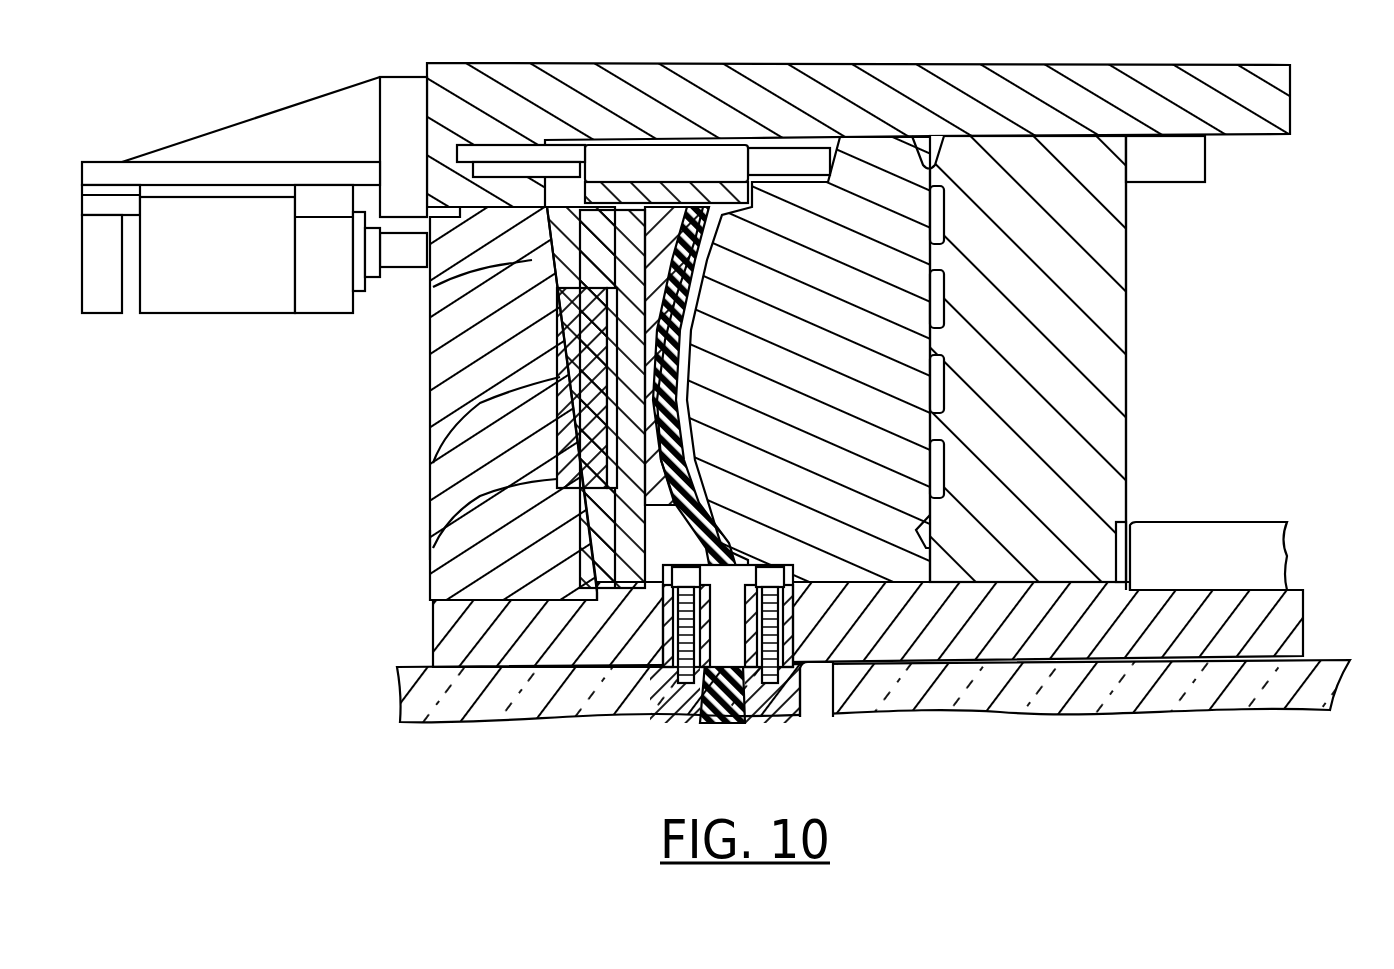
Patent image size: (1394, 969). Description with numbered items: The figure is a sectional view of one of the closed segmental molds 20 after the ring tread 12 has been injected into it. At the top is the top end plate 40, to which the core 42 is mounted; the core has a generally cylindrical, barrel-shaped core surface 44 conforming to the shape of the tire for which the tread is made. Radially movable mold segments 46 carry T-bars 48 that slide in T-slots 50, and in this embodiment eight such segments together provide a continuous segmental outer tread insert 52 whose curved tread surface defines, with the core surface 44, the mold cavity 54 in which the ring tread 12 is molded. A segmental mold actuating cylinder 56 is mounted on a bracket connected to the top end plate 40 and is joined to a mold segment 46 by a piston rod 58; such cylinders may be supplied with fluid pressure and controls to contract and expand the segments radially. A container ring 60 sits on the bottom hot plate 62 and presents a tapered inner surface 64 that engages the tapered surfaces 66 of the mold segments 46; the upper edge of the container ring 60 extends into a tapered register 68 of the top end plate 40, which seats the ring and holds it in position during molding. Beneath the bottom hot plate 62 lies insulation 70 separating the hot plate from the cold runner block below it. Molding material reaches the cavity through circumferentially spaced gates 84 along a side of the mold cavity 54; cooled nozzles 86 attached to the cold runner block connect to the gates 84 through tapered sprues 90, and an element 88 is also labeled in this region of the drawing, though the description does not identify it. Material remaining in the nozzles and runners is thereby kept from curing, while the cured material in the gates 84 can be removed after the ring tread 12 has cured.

The ring tread 12 is at (436, 540).
The segmental mold 20 is at (430, 297).
The top end plate 40 is at (1088, 82).
The core 42 is at (1128, 332).
The core surface 44 is at (810, 170).
The mold segment 46 is at (627, 213).
The T-bar 48 is at (732, 177).
The T-slot 50 is at (708, 262).
The segmental outer tread insert 52 is at (688, 540).
The mold cavity 54 is at (594, 562).
The segmental mold actuating cylinder 56 is at (168, 295).
The piston rod 58 is at (408, 255).
The container ring 60 is at (432, 585).
The bottom hot plate 62 is at (445, 630).
The tapered inner surface 64 is at (441, 470).
The tapered surface 66 is at (438, 368).
The tapered register 68 is at (478, 190).
The insulation 70 is at (1330, 690).
The gate 84 is at (800, 556).
The cooled nozzle 86 is at (760, 700).
The sealing strip 88 is at (700, 720).
The tapered sprue 90 is at (805, 560).